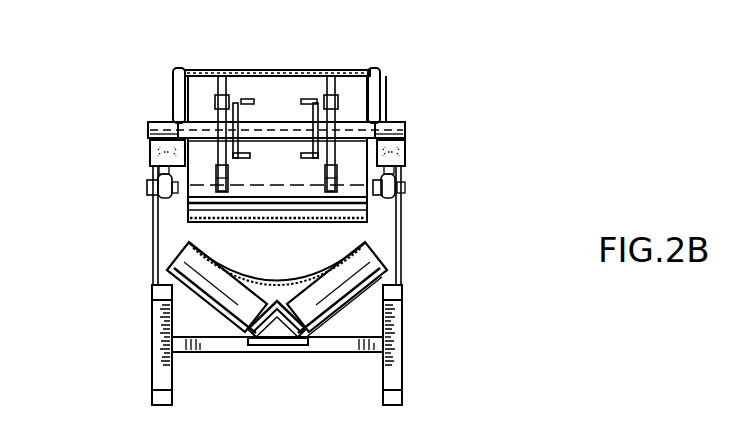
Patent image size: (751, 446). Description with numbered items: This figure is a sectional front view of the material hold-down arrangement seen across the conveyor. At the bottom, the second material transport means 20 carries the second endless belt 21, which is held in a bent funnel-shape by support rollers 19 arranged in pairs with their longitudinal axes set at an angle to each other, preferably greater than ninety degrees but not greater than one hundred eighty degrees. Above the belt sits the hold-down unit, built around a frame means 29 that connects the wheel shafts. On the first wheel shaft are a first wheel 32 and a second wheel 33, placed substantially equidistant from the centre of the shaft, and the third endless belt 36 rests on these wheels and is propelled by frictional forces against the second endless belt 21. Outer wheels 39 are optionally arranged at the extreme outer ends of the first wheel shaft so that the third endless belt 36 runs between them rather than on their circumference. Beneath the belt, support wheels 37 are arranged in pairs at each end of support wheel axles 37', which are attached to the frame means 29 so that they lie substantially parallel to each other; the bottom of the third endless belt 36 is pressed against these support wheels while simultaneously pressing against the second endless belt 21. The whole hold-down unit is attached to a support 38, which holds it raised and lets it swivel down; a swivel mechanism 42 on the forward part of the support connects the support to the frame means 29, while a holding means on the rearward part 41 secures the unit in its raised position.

The support rollers 19 is at (313, 328).
The second material transport means 20 is at (437, 341).
The second endless belt 21 is at (340, 262).
The frame means 29 is at (307, 100).
The first wheel 32 is at (217, 90).
The second wheel 33 is at (338, 70).
The third endless belt 36 is at (300, 68).
The support wheels 37 is at (277, 188).
The support wheel axles 37' is at (288, 174).
The support 38 is at (402, 290).
The outer wheels 39 is at (172, 75).
The rearward part 41 is at (407, 237).
The swivel mechanism 42 is at (188, 128).